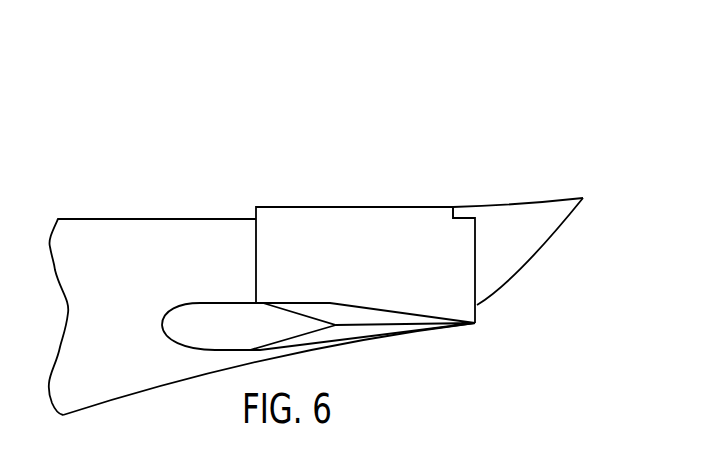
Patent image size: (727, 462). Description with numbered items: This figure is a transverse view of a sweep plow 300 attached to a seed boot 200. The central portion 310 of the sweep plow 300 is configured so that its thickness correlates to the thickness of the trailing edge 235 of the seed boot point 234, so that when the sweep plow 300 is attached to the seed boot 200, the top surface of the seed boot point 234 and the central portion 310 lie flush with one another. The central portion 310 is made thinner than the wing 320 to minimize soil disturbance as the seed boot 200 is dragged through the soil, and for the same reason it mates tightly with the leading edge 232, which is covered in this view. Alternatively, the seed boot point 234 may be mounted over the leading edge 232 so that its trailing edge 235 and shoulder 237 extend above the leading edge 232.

The seed boot 200 is at (93, 218).
The leading edge 232 is at (177, 218).
The sweep plow 300 is at (296, 206).
The central portion 310 is at (350, 206).
The shoulder 237 is at (453, 206).
The trailing edge 235 is at (491, 206).
The seed boot point 234 is at (556, 200).
The wing 320 is at (365, 337).